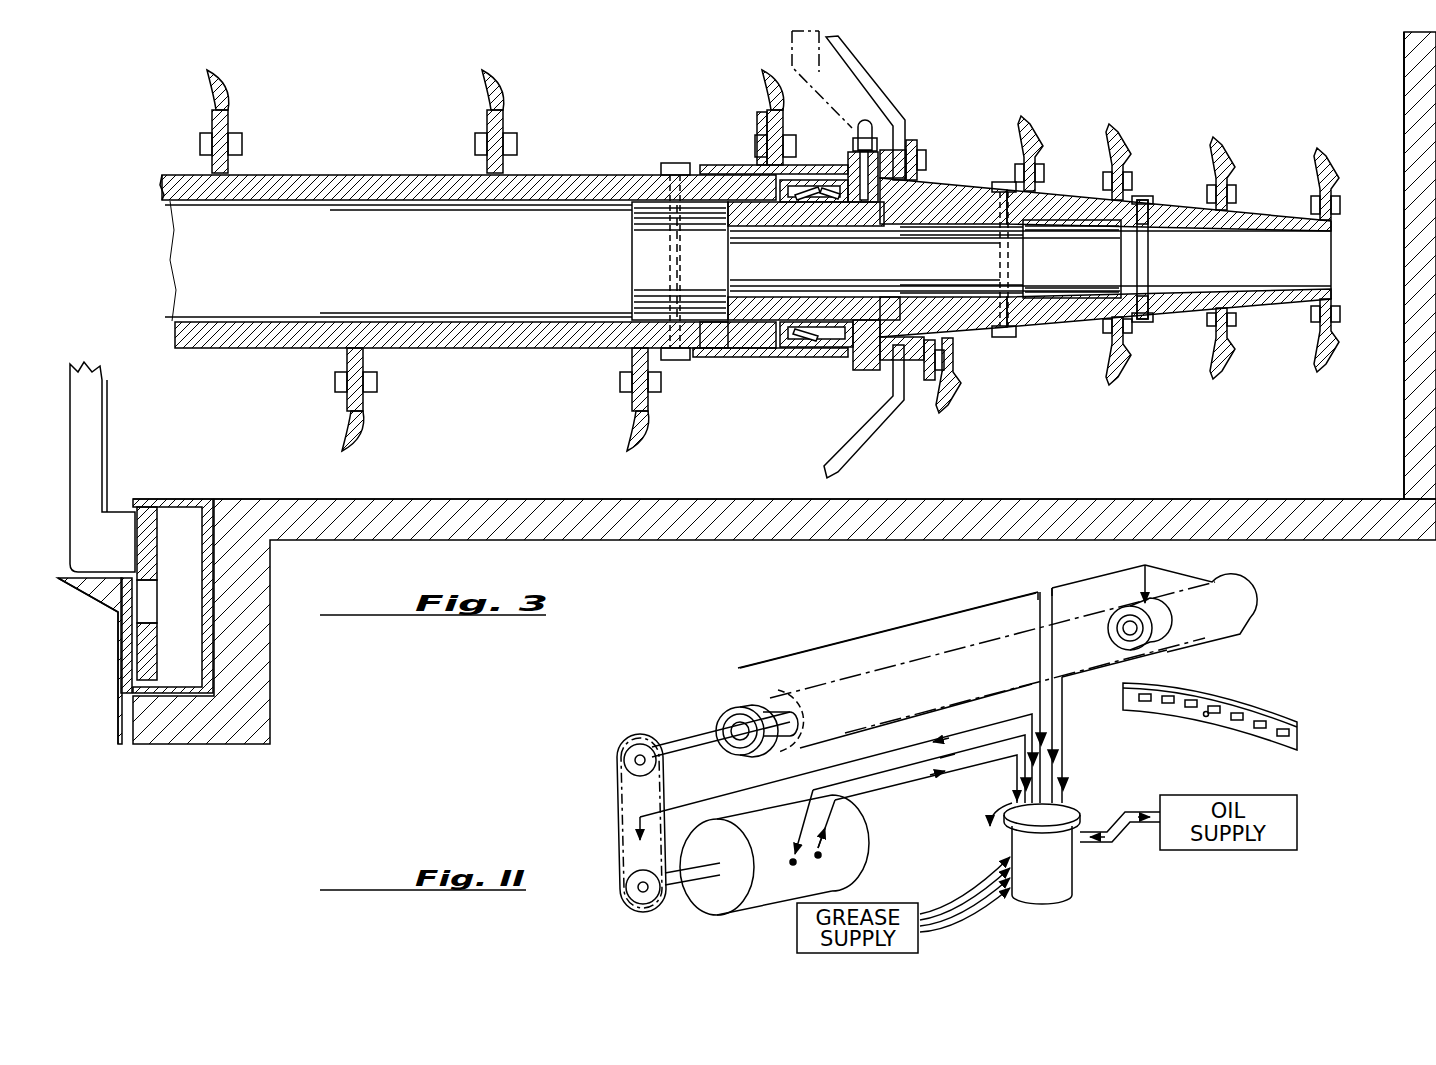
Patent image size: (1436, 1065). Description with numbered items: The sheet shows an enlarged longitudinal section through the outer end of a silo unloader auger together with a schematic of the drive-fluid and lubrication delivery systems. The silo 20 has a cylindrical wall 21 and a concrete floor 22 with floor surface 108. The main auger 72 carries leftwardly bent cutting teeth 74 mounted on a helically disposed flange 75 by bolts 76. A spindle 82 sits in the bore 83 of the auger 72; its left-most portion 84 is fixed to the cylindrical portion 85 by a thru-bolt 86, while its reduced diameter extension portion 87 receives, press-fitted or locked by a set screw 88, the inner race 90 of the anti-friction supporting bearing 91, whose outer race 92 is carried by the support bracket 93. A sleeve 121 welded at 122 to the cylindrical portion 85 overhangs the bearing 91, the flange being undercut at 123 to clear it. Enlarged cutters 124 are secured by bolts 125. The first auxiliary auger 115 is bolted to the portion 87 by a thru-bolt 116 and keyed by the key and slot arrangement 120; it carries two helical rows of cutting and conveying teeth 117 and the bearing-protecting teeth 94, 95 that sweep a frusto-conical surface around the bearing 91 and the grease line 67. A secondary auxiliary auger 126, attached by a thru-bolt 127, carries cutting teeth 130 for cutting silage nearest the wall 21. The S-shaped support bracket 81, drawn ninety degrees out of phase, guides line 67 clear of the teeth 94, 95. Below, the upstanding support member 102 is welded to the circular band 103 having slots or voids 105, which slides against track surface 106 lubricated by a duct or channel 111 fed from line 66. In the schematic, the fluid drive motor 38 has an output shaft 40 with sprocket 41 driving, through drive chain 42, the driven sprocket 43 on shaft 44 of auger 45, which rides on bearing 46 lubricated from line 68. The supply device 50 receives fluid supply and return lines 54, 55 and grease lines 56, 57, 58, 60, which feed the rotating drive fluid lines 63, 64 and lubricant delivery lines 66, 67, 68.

In FIG. 3, the silo 20 is at (1402, 70).
In FIG. 3, the cylindrical wall 21 is at (1402, 352).
In FIG. 3, the silo bottom or floor 22 is at (1144, 490).
In FIG. 11, the fluid drive motor 38 is at (765, 890).
In FIG. 11, the output shaft 40 is at (700, 878).
In FIG. 11, the sprocket or drive member 41 is at (630, 880).
In FIG. 11, the drive chain 42 is at (612, 796).
In FIG. 11, the driven sprocket 43 is at (625, 755).
In FIG. 11, the shaft 44 is at (690, 740).
In FIG. 11, the auger 45 is at (982, 685).
In FIG. 11, the bearing 46 is at (738, 710).
In FIG. 11, the supply device 50 is at (1058, 882).
In FIG. 11, the fluid supply line 54 is at (1115, 845).
In FIG. 11, the fluid return line 55 is at (1118, 815).
In FIG. 11, the grease line 56 is at (958, 930).
In FIG. 11, the grease line 57 is at (950, 896).
In FIG. 11, the grease line 58 is at (975, 882).
In FIG. 11, the grease line 60 is at (1000, 858).
In FIG. 11, the drive fluid line 63 is at (850, 800).
In FIG. 11, the drive fluid line 64 is at (802, 838).
In FIG. 11, the lubricant delivery line 66 is at (1096, 690).
In FIG. 3, the lubricant delivery line 67 is at (873, 120).
In FIG. 11, the lubricant delivery line 67 is at (1085, 580).
In FIG. 11, the lubricant delivery line 68 is at (922, 620).
In FIG. 3, the auger 72 is at (333, 176).
In FIG. 3, the cutting teeth 74 is at (222, 92).
In FIG. 3, the helically disposed flange 75 is at (205, 138).
In FIG. 3, the bolts 76 is at (240, 138).
In FIG. 3, the support bracket 81 is at (822, 82).
In FIG. 3, the spindle 82 is at (710, 312).
In FIG. 3, the bore 83 is at (420, 322).
In FIG. 3, the left-most portion 84 is at (632, 232).
In FIG. 3, the cylindrical portion 85 is at (470, 196).
In FIG. 3, the thru-bolt 86 is at (680, 252).
In FIG. 3, the reduced diameter extension portion 87 is at (990, 270).
In FIG. 3, the set screw 88 is at (885, 208).
In FIG. 3, the inner race 90 is at (850, 205).
In FIG. 11, the inner race 90 is at (1160, 621).
In FIG. 3, the supporting bearing 91 is at (892, 160).
In FIG. 3, the outer race 92 is at (832, 344).
In FIG. 3, the support bracket 93 is at (868, 350).
In FIG. 3, the bearing-protecting cutting tooth 94 is at (860, 70).
In FIG. 3, the bearing-protecting cutting tooth 95 is at (757, 112).
In FIG. 3, the upstanding support member 102 is at (106, 458).
In FIG. 3, the band 103 is at (160, 642).
In FIG. 11, the band 103 is at (1200, 694).
In FIG. 3, the slots or voids 105 is at (150, 598).
In FIG. 3, the track surface 106 is at (127, 695).
In FIG. 3, the floor 108 is at (430, 498).
In FIG. 11, the duct or channel 111 is at (1205, 718).
In FIG. 3, the first auxiliary auger 115 is at (1058, 215).
In FIG. 3, the thru-bolt 116 is at (1002, 183).
In FIG. 3, the cutting and conveying teeth 117 is at (1028, 115).
In FIG. 3, the key and slot arrangement 120 is at (938, 205).
In FIG. 3, the sleeve 121 is at (790, 357).
In FIG. 3, the weld 122 is at (668, 170).
In FIG. 3, the undercut 123 is at (770, 166).
In FIG. 3, the enlarged cutters 124 is at (920, 148).
In FIG. 3, the bolts 125 is at (930, 385).
In FIG. 3, the secondary auxiliary auger 126 is at (1248, 205).
In FIG. 3, the thru-bolt 127 is at (1142, 198).
In FIG. 3, the cutting teeth 130 is at (1325, 145).